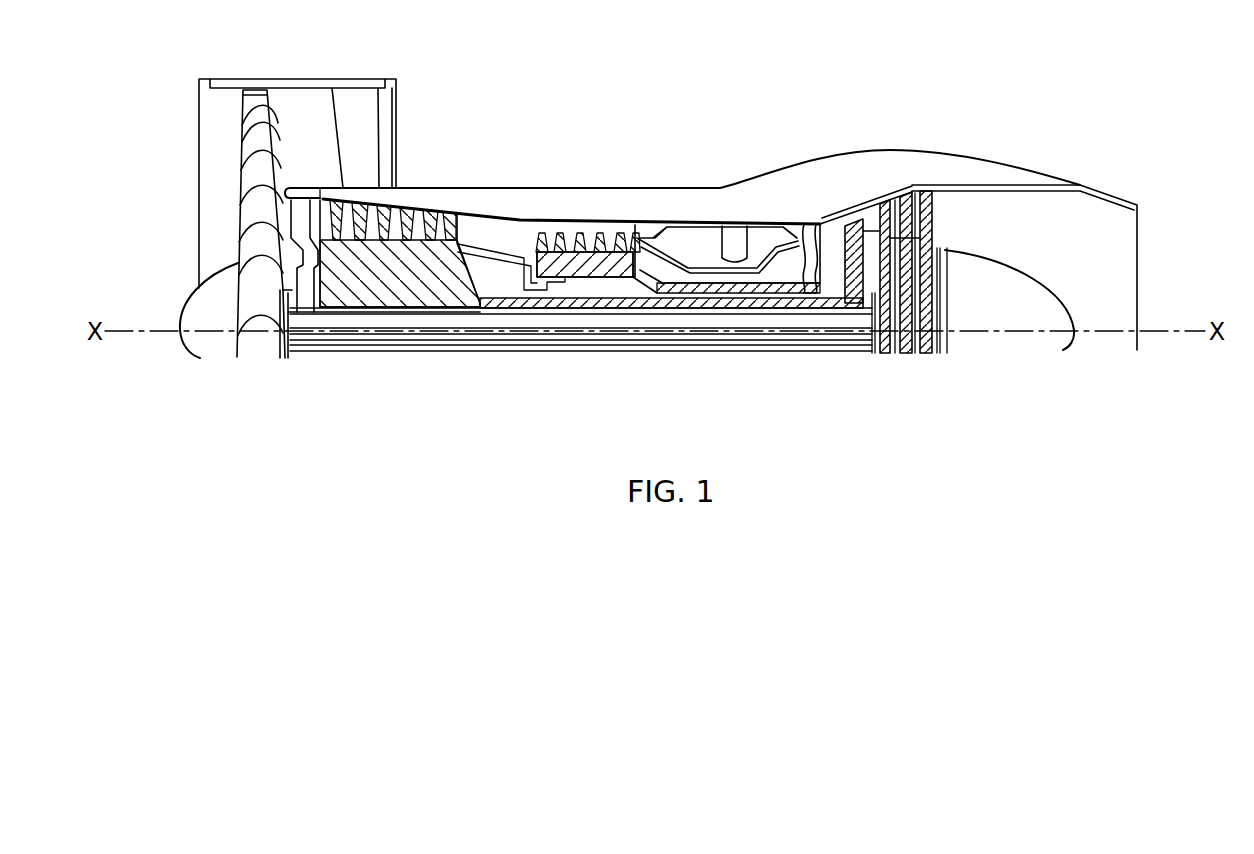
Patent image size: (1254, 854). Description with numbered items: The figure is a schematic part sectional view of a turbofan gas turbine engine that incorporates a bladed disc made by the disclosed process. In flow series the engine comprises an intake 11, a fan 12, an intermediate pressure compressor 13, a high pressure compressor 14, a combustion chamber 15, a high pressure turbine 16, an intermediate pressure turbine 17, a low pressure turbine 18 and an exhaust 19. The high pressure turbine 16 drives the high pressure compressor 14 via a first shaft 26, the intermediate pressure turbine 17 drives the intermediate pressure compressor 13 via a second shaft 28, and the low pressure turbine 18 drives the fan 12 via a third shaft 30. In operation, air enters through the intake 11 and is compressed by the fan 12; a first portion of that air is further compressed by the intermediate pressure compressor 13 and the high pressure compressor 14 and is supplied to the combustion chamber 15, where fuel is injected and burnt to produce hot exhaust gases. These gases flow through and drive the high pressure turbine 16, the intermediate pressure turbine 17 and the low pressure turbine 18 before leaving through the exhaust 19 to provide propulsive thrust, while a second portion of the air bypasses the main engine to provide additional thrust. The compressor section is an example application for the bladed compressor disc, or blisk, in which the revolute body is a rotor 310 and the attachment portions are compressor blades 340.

The intake 11 is at (207, 158).
The fan 12 is at (265, 115).
The intermediate pressure compressor 13 is at (397, 250).
The high pressure compressor 14 is at (572, 262).
The compressor blades 340 is at (538, 240).
The combustion chamber 15 is at (700, 237).
The first shaft 26 is at (780, 290).
The high pressure turbine 16 is at (812, 250).
The intermediate pressure turbine 17 is at (857, 233).
The low pressure turbine 18 is at (912, 187).
The exhaust 19 is at (1100, 220).
The second shaft 28 is at (608, 300).
The third shaft 30 is at (515, 320).
The rotor 310 is at (567, 270).